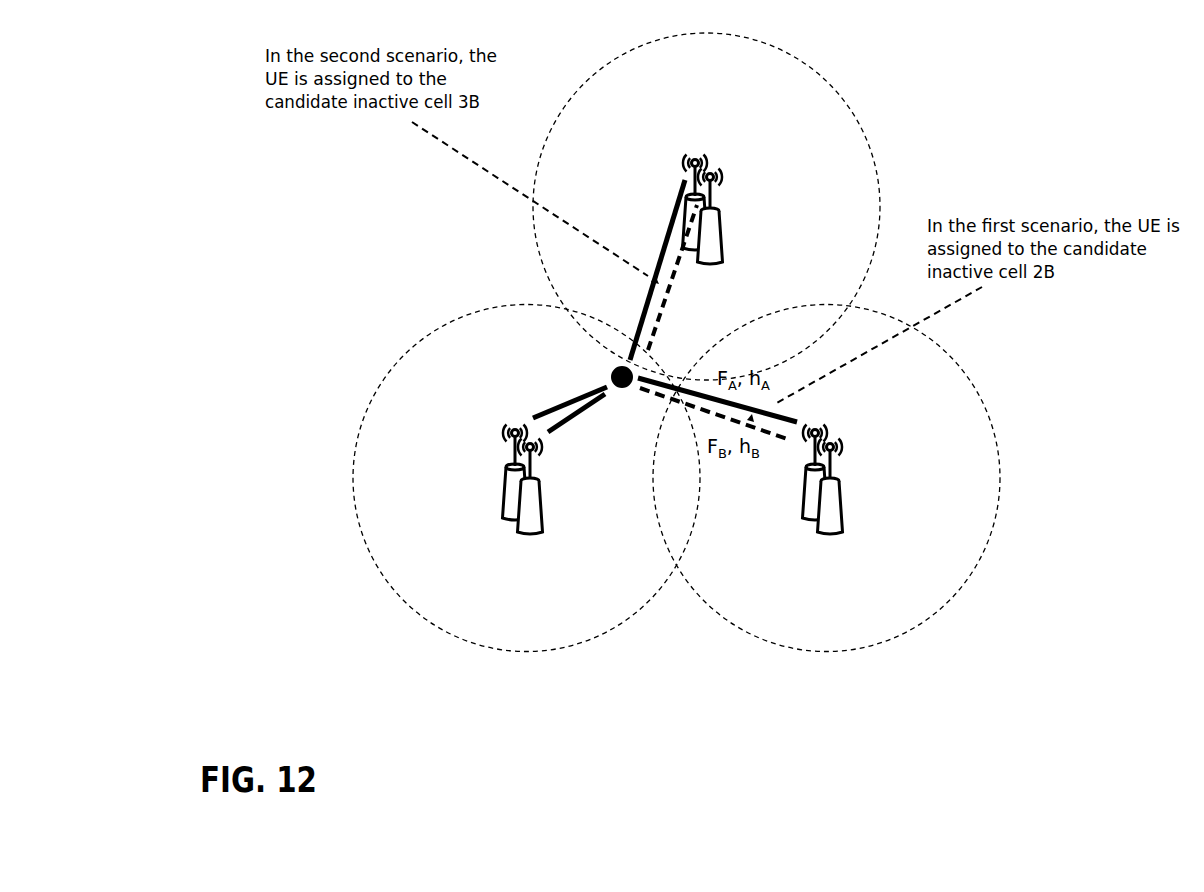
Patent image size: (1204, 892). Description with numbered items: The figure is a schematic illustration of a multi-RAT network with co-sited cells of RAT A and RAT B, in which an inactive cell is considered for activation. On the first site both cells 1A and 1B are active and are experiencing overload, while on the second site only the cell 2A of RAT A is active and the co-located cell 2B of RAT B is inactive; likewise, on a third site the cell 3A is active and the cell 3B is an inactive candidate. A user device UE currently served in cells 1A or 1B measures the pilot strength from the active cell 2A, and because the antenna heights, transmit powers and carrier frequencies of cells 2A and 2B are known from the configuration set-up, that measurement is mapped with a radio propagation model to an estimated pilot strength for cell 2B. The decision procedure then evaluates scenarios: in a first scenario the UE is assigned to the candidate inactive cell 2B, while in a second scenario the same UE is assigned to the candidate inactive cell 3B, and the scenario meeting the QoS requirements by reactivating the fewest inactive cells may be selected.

The user device UE is at (620, 365).
The cell 1A is at (472, 486).
The cell 1B is at (557, 502).
The cell 2A is at (774, 486).
The cell 2B is at (863, 502).
The cell 3A is at (690, 175).
The cell 3B is at (770, 191).